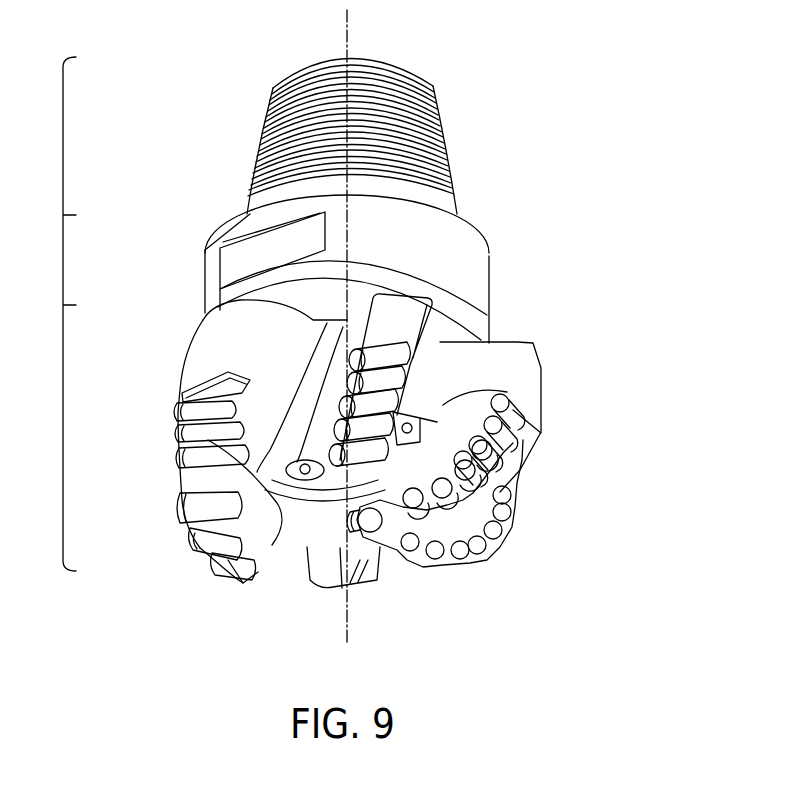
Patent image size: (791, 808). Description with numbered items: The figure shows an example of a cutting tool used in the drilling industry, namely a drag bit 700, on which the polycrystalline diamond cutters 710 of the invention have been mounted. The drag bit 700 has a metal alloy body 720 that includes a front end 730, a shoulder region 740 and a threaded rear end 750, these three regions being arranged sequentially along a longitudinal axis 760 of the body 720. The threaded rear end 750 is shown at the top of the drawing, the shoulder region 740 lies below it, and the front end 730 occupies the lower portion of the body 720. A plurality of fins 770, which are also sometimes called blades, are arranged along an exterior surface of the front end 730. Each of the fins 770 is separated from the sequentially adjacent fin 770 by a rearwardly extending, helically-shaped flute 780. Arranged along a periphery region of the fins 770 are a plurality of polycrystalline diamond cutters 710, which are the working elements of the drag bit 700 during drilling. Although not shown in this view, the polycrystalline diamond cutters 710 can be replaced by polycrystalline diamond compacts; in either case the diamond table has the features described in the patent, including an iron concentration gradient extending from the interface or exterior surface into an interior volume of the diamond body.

The drag bit 700 is at (520, 141).
The polycrystalline diamond cutters 710 is at (517, 605).
The metal alloy body 720 is at (410, 243).
The front end 730 is at (63, 435).
The shoulder region 740 is at (266, 314).
The threaded rear end 750 is at (63, 134).
The longitudinal axis 760 is at (352, 30).
The fins 770 is at (197, 353).
The helically-shaped flute 780 is at (440, 378).